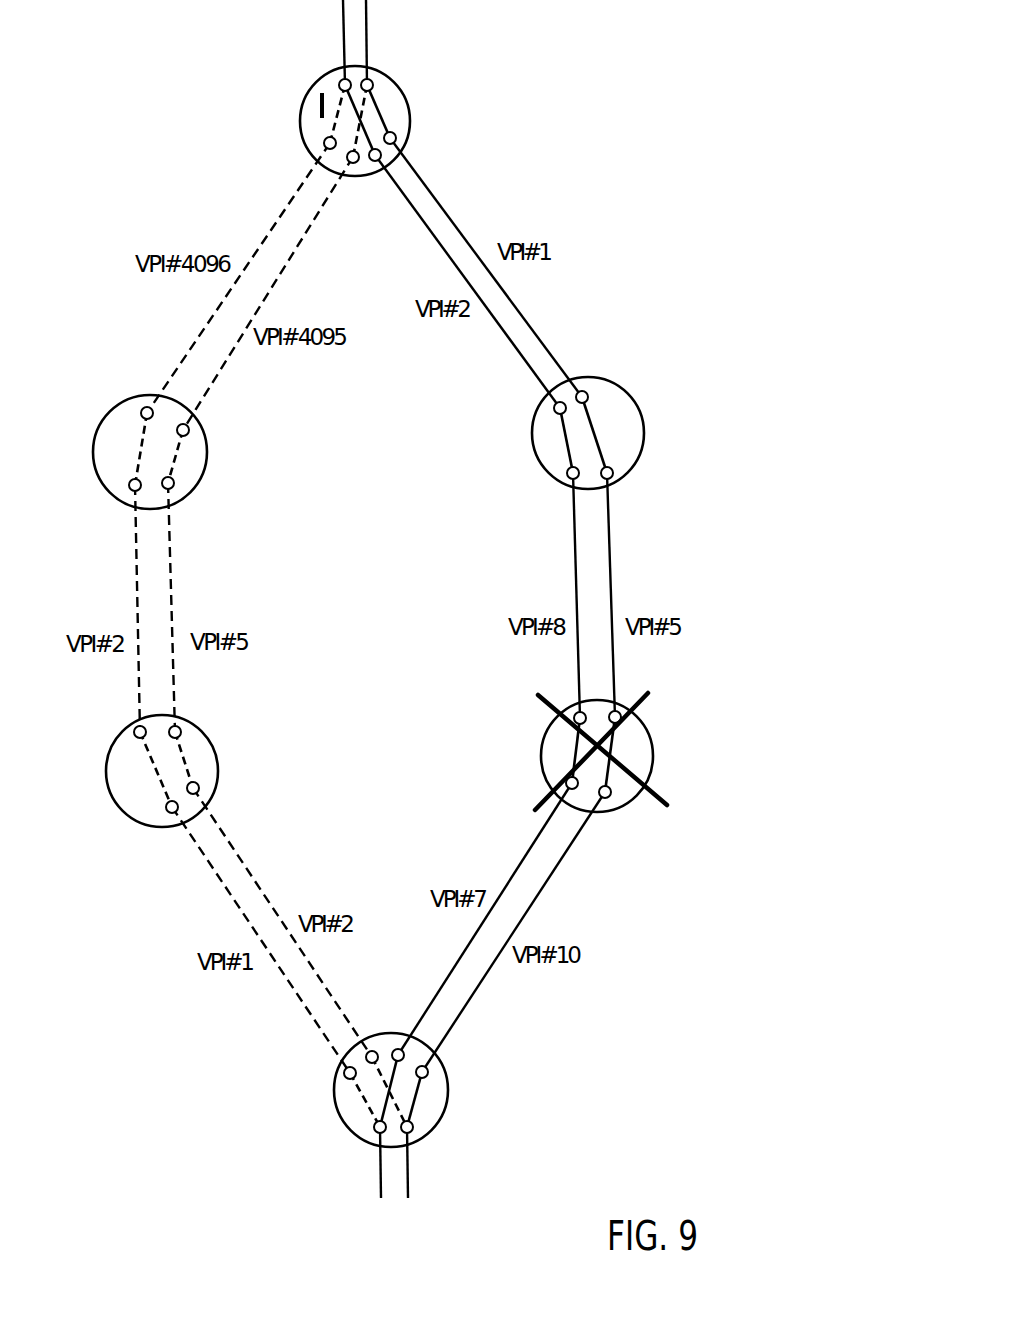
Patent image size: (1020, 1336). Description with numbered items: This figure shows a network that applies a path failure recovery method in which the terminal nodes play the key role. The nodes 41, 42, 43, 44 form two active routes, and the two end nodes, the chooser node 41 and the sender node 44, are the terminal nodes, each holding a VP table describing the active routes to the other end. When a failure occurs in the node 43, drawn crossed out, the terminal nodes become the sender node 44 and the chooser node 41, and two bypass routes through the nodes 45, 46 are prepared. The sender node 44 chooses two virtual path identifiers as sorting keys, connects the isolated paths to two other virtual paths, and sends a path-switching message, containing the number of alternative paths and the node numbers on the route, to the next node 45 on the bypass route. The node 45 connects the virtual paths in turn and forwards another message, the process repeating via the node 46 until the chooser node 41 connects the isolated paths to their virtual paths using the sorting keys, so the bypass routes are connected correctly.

The chooser node 41 is at (405, 90).
The node 42 is at (615, 387).
The failed node 43 is at (628, 803).
The sender node 44 is at (445, 1110).
The node 45 is at (142, 827).
The node 46 is at (105, 487).